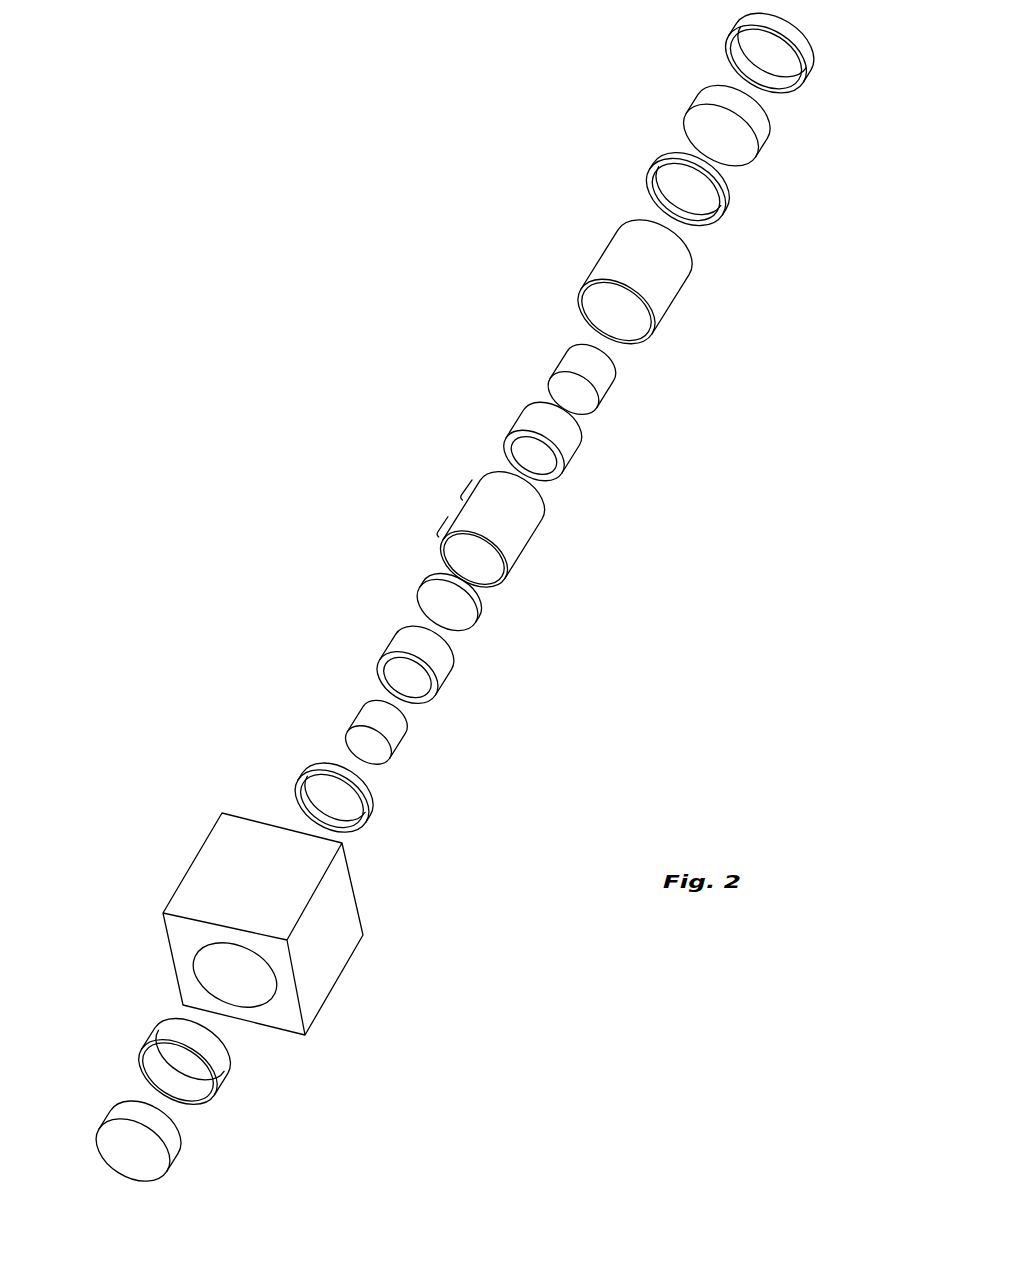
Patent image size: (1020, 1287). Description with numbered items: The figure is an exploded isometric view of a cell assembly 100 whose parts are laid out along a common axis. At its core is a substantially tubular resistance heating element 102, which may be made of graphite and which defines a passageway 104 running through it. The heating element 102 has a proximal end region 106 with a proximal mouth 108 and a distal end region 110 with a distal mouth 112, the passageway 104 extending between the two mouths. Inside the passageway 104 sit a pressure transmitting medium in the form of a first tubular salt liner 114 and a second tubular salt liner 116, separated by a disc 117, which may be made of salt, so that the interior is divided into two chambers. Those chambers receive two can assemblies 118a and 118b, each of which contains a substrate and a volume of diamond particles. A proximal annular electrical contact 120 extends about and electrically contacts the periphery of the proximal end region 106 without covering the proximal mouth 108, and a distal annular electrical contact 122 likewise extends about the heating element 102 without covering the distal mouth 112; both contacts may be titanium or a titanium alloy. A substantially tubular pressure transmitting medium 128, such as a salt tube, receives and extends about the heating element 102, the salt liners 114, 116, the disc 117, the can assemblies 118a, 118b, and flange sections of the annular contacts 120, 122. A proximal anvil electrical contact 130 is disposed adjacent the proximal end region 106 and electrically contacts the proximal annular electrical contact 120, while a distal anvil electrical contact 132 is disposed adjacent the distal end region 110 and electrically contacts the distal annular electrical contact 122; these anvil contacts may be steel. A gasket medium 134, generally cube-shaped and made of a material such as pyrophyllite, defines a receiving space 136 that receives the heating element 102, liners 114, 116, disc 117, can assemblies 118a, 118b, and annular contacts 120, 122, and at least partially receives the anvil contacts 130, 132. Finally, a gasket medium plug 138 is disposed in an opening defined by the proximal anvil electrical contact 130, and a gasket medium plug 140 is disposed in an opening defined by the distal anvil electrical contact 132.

The cell assembly 100 is at (371, 230).
The resistance heating element 102 is at (494, 532).
The passageway 104 is at (474, 559).
The proximal end region 106 is at (467, 489).
The proximal mouth 108 is at (526, 526).
The distal end region 110 is at (443, 526).
The distal mouth 112 is at (473, 558).
The first tubular salt liner 114 is at (567, 457).
The second tubular salt liner 116 is at (445, 680).
The disc 117 is at (478, 617).
The can assembly 118a is at (603, 392).
The can assembly 118b is at (397, 742).
The proximal annular electrical contact 120 is at (734, 211).
The distal annular electrical contact 122 is at (388, 822).
The substantially tubular pressure transmitting medium 128 is at (677, 302).
The proximal anvil electrical contact 130 is at (807, 72).
The distal anvil electrical contact 132 is at (218, 1088).
The gasket medium 134 is at (291, 924).
The receiving space 136 is at (250, 985).
The gasket medium plug 138 is at (763, 139).
The gasket medium plug 140 is at (177, 1160).